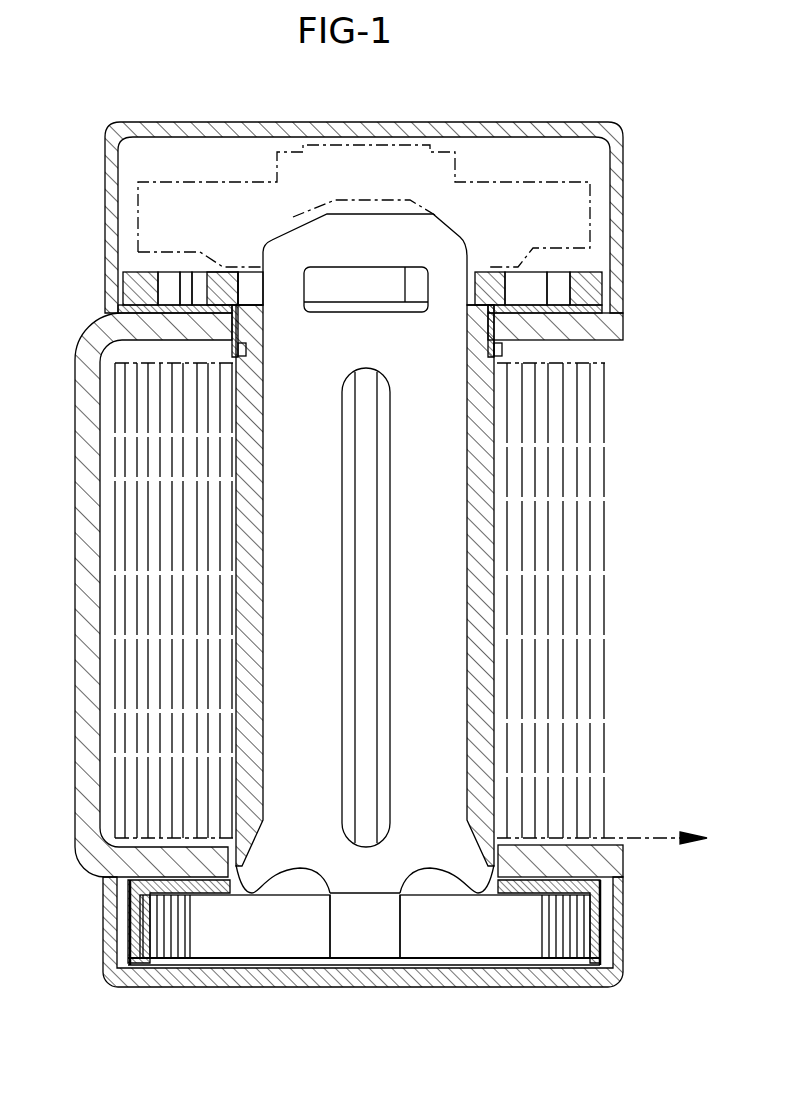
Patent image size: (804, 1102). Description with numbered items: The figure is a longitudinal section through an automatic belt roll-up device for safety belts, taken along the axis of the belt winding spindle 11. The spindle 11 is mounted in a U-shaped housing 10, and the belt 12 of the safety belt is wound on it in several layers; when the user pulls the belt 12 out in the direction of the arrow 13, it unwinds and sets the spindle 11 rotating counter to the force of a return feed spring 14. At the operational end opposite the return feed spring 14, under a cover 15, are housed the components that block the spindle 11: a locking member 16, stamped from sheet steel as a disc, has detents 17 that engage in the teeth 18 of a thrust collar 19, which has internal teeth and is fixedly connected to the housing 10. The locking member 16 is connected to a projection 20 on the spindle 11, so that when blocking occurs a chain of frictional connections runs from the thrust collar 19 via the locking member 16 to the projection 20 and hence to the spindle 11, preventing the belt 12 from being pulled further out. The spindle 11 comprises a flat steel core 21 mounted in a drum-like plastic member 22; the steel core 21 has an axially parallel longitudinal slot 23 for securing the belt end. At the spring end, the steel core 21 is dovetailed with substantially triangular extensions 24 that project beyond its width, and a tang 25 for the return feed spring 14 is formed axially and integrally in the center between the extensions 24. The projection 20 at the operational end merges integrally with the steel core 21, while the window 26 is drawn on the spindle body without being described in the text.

The housing 10 is at (83, 487).
The belt winding spindle 11 is at (497, 470).
The belt 12 is at (580, 534).
The arrow 13 is at (650, 832).
The return feed spring 14 is at (575, 927).
The cover 15 is at (612, 230).
The locking member 16 is at (487, 277).
The detents 17 is at (198, 282).
The teeth 18 is at (167, 292).
The thrust collar 19 is at (137, 273).
The projection 20 is at (370, 611).
The flat steel core 21 is at (430, 521).
The drum-like formed member 22 is at (470, 580).
The longitudinal slot 23 is at (383, 643).
The triangular extensions 24 is at (252, 890).
The tang 25 is at (360, 950).
The window 26 is at (388, 310).